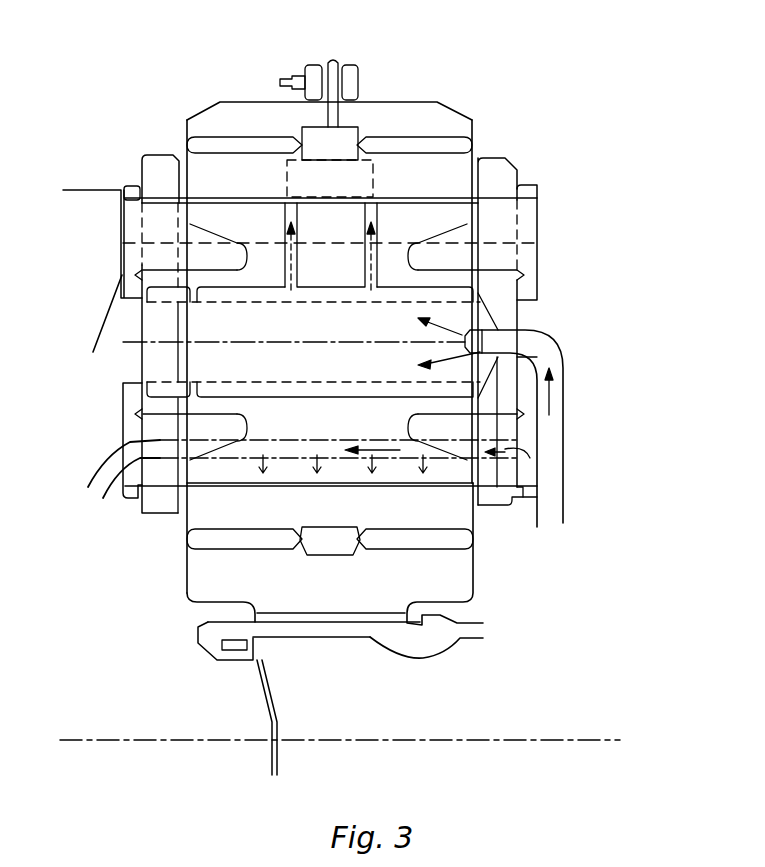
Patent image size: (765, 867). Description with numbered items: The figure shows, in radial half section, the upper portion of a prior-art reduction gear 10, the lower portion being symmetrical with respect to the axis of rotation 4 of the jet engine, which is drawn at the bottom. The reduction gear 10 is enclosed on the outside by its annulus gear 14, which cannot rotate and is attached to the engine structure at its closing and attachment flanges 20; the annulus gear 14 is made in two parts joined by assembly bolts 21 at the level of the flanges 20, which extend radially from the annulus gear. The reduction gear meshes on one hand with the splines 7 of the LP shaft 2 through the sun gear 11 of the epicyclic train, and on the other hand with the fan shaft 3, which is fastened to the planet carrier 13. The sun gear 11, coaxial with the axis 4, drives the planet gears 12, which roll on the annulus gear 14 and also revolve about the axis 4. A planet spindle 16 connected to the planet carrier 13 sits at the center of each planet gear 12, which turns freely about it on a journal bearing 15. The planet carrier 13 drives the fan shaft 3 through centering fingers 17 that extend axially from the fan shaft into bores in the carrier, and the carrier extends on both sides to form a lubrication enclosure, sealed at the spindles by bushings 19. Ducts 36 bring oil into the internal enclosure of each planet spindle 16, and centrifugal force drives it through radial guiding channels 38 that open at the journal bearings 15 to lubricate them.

The LP shaft 2 is at (433, 643).
The fan shaft 3 is at (88, 208).
The axis of rotation 4 is at (368, 740).
The splines 7 is at (302, 622).
The reduction gear 10 is at (192, 66).
The sun gear 11 is at (200, 573).
The planet gears 12 is at (452, 170).
The planet carrier 13 is at (157, 172).
The annulus gear 14 is at (440, 120).
The journal bearing 15 is at (400, 200).
The planet spindle 16 is at (233, 276).
The centering fingers 17 is at (212, 196).
The bushings 19 is at (527, 222).
The closing and attachment flanges 20 is at (323, 62).
The assembly bolts 21 is at (358, 82).
The ducts 36 is at (543, 332).
The guiding channels 38 is at (285, 300).